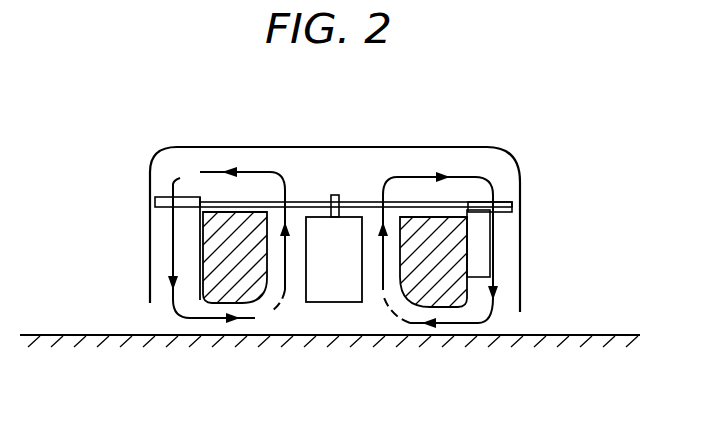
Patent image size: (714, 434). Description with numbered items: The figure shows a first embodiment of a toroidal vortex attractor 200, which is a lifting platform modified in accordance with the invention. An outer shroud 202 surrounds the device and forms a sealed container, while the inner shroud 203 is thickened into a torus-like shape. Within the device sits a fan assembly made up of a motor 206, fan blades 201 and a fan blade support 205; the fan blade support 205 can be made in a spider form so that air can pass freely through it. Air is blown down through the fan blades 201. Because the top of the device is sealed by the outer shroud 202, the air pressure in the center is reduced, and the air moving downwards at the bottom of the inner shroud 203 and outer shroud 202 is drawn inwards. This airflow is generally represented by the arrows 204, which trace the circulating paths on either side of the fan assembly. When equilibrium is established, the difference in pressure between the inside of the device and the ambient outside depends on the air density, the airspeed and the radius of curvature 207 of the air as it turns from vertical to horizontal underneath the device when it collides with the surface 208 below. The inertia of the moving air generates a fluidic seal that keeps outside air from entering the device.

The toroidal vortex attractor 200 is at (590, 96).
The fan blades 201 is at (160, 199).
The outer shroud 202 is at (524, 218).
The inner shroud 203 is at (478, 283).
The arrows 204 is at (200, 170).
The fan blade support 205 is at (304, 200).
The motor 206 is at (318, 302).
The radius of curvature 207 is at (215, 291).
The surface 208 is at (243, 338).